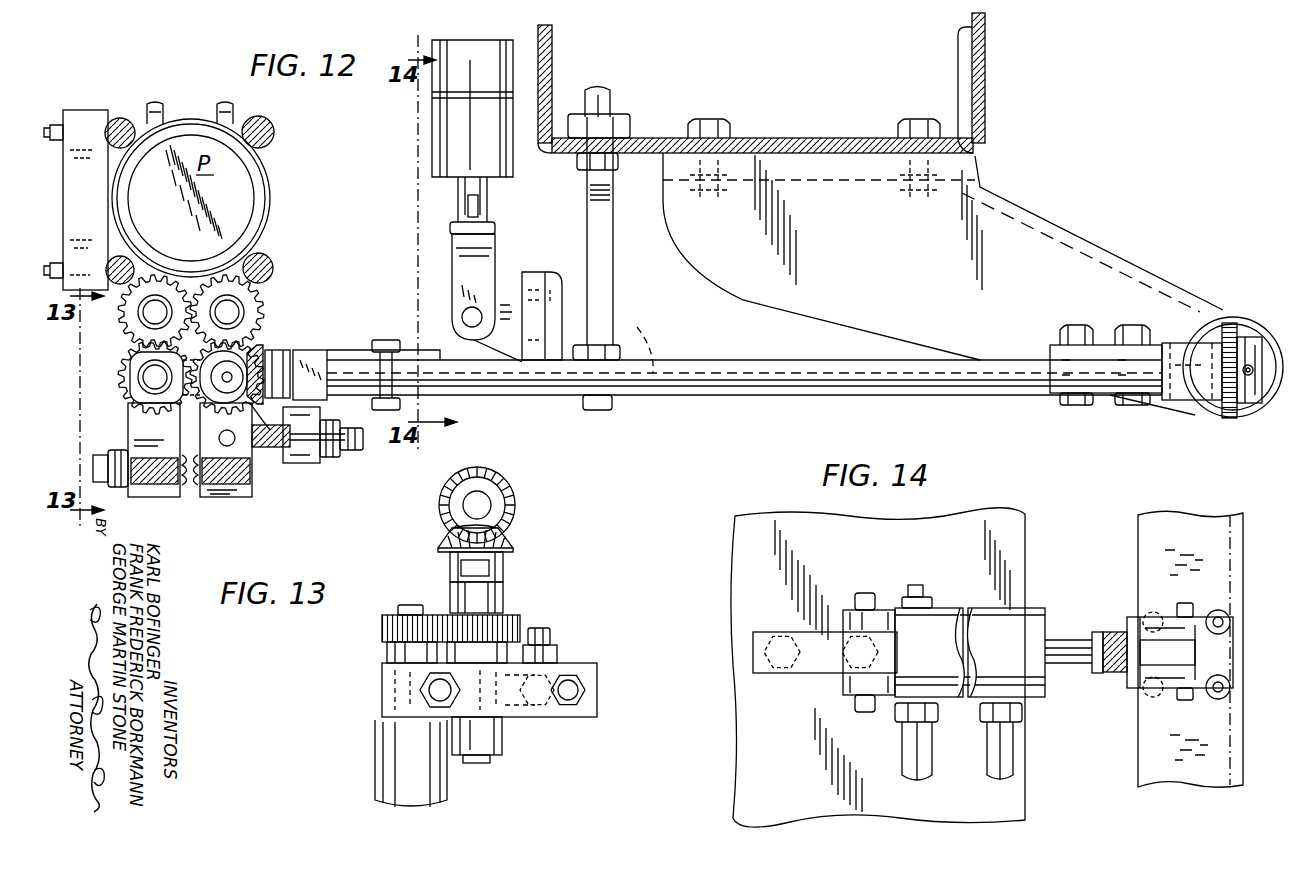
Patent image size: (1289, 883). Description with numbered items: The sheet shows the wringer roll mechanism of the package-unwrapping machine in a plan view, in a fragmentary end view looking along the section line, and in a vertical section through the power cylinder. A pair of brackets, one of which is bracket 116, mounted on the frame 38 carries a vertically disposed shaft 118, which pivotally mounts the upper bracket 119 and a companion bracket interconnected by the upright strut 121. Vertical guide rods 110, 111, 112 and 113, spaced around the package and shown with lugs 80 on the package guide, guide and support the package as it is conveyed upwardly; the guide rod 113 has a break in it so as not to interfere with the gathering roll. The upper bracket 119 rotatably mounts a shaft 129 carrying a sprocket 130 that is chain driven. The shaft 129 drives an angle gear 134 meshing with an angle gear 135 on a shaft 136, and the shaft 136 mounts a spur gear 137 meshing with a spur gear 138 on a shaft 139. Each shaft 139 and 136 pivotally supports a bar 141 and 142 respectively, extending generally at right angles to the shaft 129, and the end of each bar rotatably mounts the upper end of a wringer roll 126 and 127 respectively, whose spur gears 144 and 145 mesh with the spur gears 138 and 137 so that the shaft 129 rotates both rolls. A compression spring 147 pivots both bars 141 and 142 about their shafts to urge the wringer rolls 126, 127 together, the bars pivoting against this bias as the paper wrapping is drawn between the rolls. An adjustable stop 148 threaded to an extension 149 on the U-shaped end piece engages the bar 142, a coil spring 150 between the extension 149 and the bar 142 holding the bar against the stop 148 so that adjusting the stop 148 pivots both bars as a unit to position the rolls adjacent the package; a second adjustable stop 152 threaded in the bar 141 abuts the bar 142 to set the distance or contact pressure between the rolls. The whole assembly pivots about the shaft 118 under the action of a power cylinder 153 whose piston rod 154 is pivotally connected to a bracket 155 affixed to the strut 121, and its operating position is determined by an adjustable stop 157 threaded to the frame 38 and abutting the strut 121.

In FIG. 12, the frame 38 is at (822, 140).
In FIG. 14, the frame 38 is at (1026, 552).
In FIG. 12, the lugs 80 is at (162, 107).
In FIG. 12, the vertical guide rod 110 is at (108, 236).
In FIG. 12, the vertical guide rod 111 is at (118, 118).
In FIG. 12, the vertical guide rod 112 is at (274, 131).
In FIG. 12, the vertical guide rod 113 is at (263, 260).
In FIG. 12, the bracket 116 is at (1104, 243).
In FIG. 12, the shaft 118 is at (1200, 421).
In FIG. 12, the upper bracket 119 is at (982, 393).
In FIG. 12, the strut 121 is at (525, 309).
In FIG. 14, the strut 121 is at (1148, 571).
In FIG. 12, the wringer roll 126 is at (125, 300).
In FIG. 13, the wringer roll 126 is at (377, 752).
In FIG. 12, the wringer roll 127 is at (258, 298).
In FIG. 12, the shaft 129 is at (760, 366).
In FIG. 13, the shaft 129 is at (490, 500).
In FIG. 12, the sprocket 130 is at (1228, 325).
In FIG. 12, the angle gear 134 is at (272, 350).
In FIG. 13, the angle gear 134 is at (514, 517).
In FIG. 12, the angle gear 135 is at (268, 403).
In FIG. 13, the angle gear 135 is at (513, 544).
In FIG. 12, the shaft 136 is at (228, 375).
In FIG. 12, the spur gear 137 is at (206, 406).
In FIG. 12, the spur gear 138 is at (130, 392).
In FIG. 13, the spur gear 138 is at (510, 626).
In FIG. 12, the shaft 139 is at (147, 380).
In FIG. 13, the shaft 139 is at (485, 580).
In FIG. 12, the bar 141 is at (152, 492).
In FIG. 13, the bar 141 is at (597, 680).
In FIG. 12, the bar 142 is at (243, 492).
In FIG. 12, the spur gear 144 is at (164, 290).
In FIG. 13, the spur gear 144 is at (382, 638).
In FIG. 12, the spur gear 145 is at (218, 292).
In FIG. 12, the spring 147 is at (190, 492).
In FIG. 12, the adjustable stop 148 is at (352, 452).
In FIG. 13, the adjustable stop 148 is at (533, 722).
In FIG. 12, the extension 149 is at (311, 466).
In FIG. 12, the coil spring 150 is at (274, 452).
In FIG. 13, the coil spring 150 is at (552, 648).
In FIG. 12, the adjustable stop 152 is at (131, 362).
In FIG. 13, the adjustable stop 152 is at (428, 690).
In FIG. 12, the power cylinder 153 is at (492, 178).
In FIG. 14, the power cylinder 153 is at (948, 616).
In FIG. 12, the piston rod 154 is at (488, 208).
In FIG. 14, the piston rod 154 is at (1068, 666).
In FIG. 12, the bracket 155 is at (470, 290).
In FIG. 12, the adjustable stop 157 is at (590, 245).